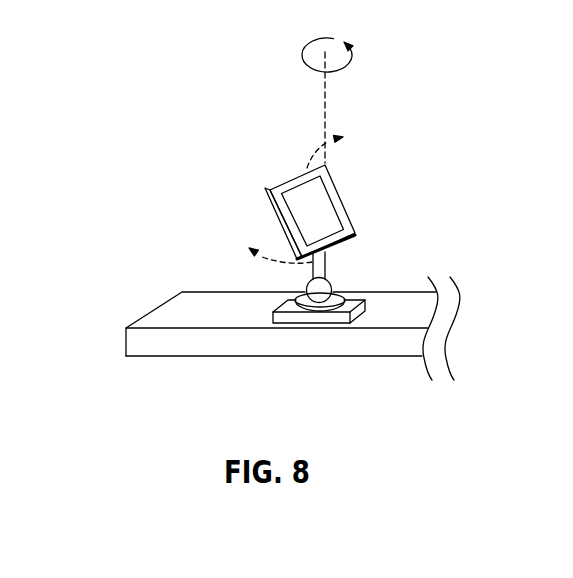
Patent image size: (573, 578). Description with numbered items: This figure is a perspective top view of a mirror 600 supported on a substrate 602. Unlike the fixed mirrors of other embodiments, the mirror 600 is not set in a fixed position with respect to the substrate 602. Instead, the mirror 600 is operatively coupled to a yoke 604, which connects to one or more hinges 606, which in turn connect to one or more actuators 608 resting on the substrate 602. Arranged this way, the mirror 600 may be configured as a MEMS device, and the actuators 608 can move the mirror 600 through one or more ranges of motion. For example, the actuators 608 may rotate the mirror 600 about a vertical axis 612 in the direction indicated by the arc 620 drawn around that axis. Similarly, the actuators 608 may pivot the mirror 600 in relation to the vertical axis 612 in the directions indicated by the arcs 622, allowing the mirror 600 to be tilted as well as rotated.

The mirror 600 is at (389, 175).
The substrate 602 is at (143, 343).
The yoke 604 is at (328, 265).
The hinges 606 is at (302, 291).
The actuators 608 is at (330, 316).
The vertical axis 612 is at (327, 97).
The arc 620 is at (302, 50).
The arcs 622 is at (311, 153).